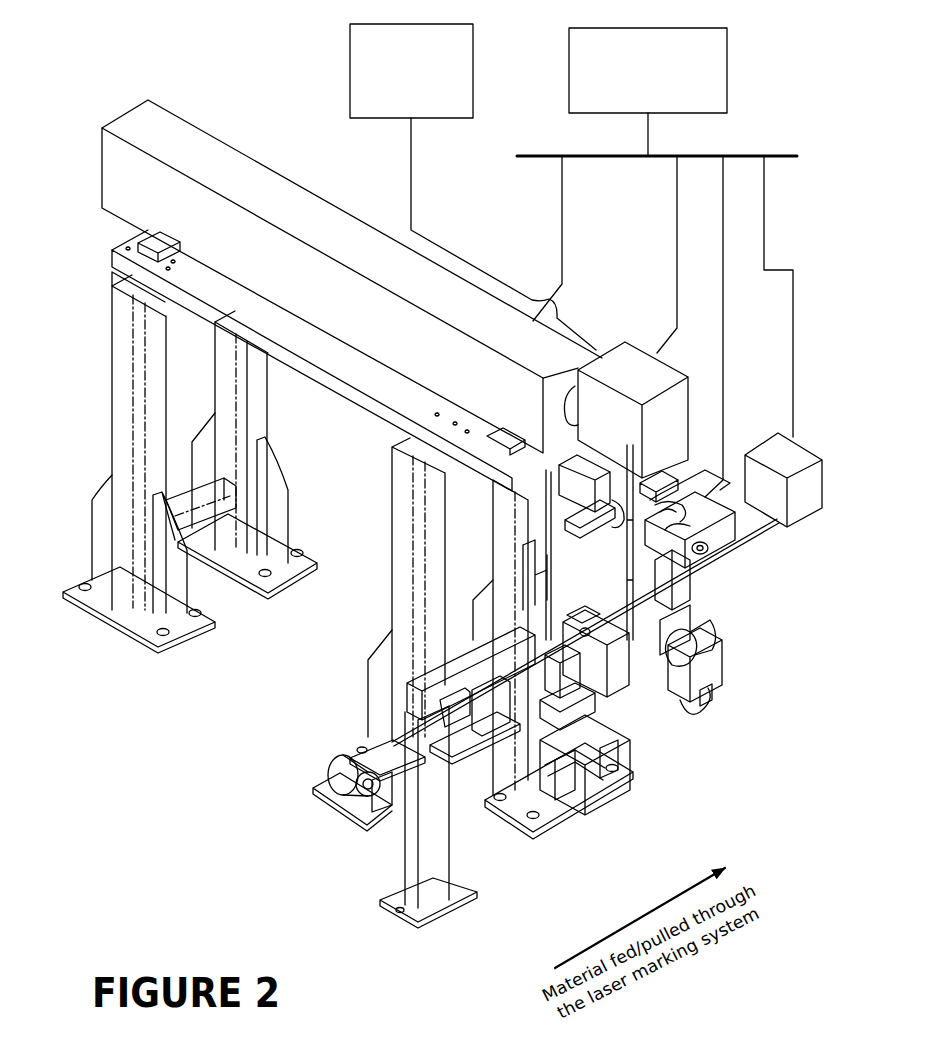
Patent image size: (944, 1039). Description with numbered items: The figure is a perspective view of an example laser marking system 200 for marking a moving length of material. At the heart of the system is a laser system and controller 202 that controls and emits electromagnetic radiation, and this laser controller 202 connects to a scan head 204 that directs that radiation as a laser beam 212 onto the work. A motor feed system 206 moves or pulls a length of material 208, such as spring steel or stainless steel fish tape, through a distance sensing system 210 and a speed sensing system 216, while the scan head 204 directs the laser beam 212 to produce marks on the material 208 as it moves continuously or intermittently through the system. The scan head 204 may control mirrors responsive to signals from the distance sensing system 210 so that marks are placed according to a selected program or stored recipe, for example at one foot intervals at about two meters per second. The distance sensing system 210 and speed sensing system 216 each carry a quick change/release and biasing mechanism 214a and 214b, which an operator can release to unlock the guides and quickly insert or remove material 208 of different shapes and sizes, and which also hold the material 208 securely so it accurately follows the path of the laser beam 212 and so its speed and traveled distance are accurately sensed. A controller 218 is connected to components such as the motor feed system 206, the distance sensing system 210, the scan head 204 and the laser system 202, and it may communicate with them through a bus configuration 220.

The laser marking system 200 is at (203, 52).
The laser system and controller 202 is at (473, 187).
The scan head 204 is at (645, 343).
The motor feed system 206 is at (798, 528).
The length of material 208 is at (763, 528).
The distance sensing system 210 is at (727, 558).
The laser beam 212 is at (626, 556).
The quick change/release and biasing mechanism 214a is at (708, 722).
The quick change/release and biasing mechanism 214b is at (586, 801).
The speed sensing system 216 is at (600, 655).
The controller 218 is at (648, 92).
The bus configuration 220 is at (549, 162).